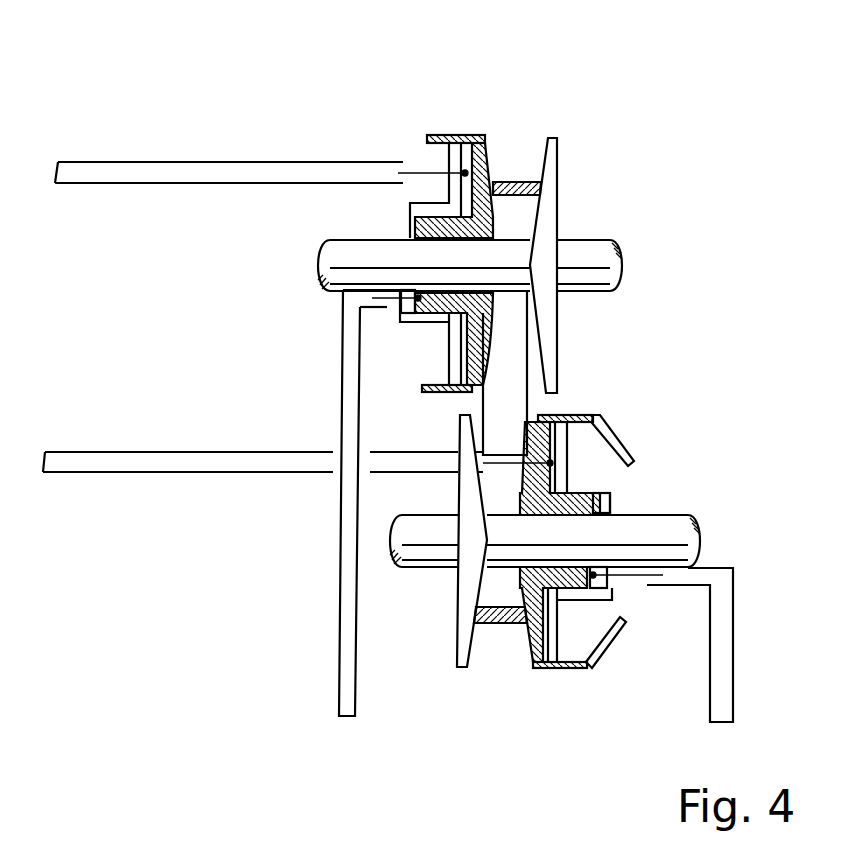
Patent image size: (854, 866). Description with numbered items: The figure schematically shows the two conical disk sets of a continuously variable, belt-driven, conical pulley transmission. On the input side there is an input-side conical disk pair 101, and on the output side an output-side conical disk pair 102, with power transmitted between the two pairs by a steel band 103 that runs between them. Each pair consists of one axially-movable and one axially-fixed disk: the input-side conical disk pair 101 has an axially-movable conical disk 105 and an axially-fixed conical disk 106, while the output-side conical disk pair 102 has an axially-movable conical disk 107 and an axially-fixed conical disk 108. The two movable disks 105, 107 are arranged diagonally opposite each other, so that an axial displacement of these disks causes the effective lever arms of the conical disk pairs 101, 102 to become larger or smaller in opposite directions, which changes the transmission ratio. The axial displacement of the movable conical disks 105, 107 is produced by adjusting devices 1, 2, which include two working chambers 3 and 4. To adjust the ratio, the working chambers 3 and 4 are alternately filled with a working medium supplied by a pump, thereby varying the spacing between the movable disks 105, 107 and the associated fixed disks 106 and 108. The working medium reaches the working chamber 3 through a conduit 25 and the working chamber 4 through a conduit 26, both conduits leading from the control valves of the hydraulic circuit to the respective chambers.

The adjusting device 1 is at (358, 213).
The adjusting device 2 is at (641, 470).
The working chamber 3 is at (598, 512).
The working chamber 4 is at (409, 203).
The conduit 25 is at (720, 672).
The conduit 26 is at (342, 542).
The input-side conical disk pair 101 is at (616, 110).
The output-side conical disk pair 102 is at (549, 681).
The steel band 103 is at (533, 403).
The axially-movable conical disk 105 is at (484, 155).
The axially-fixed conical disk 106 is at (545, 213).
The axially-movable conical disk 107 is at (538, 640).
The axially-fixed conical disk 108 is at (467, 610).